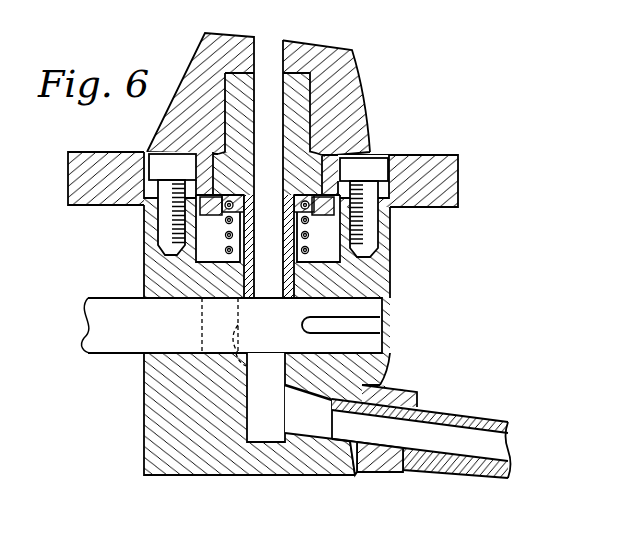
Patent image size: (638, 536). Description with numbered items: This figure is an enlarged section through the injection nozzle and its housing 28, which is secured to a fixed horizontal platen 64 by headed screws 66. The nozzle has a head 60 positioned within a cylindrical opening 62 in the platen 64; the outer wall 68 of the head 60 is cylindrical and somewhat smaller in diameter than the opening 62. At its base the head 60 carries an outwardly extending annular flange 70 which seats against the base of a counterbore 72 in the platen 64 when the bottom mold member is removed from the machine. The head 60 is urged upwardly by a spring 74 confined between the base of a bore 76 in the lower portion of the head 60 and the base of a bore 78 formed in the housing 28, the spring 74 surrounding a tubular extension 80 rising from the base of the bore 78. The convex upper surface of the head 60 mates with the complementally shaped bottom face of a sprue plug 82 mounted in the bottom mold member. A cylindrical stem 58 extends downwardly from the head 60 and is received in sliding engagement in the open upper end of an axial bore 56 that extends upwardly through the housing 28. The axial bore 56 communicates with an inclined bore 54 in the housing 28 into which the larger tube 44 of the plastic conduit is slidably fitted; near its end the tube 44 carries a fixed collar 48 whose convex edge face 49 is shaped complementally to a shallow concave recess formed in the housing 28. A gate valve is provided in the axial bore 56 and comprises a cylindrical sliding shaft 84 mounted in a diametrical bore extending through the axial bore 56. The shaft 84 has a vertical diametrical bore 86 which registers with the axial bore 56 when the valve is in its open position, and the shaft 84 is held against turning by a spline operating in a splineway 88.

The sprue plug 82 is at (232, 46).
The head 60 is at (230, 168).
The fixed horizontal platen 64 is at (80, 185).
The headed screws 66 is at (370, 170).
The outer wall 68 is at (207, 177).
The cylindrical opening 62 is at (320, 172).
The bore 76 is at (290, 203).
The tubular extension 80 is at (242, 248).
The annular flange 70 is at (220, 225).
The counterbore 72 is at (318, 228).
The spring 74 is at (390, 272).
The splineway 88 is at (366, 332).
The cylindrical sliding shaft 84 is at (84, 315).
The bore 78 is at (198, 258).
The cylindrical stem 58 is at (267, 298).
The vertical diametrical bore 86 is at (240, 362).
The housing 28 is at (185, 462).
The axial bore 56 is at (250, 432).
The inclined bore 54 is at (300, 428).
The convex edge face 49 is at (357, 448).
The collar 48 is at (386, 472).
The tube 44 is at (467, 418).